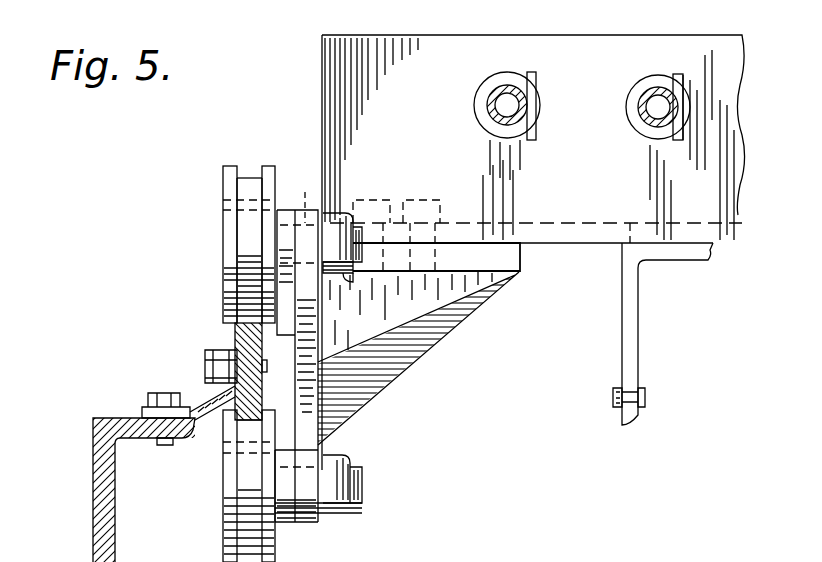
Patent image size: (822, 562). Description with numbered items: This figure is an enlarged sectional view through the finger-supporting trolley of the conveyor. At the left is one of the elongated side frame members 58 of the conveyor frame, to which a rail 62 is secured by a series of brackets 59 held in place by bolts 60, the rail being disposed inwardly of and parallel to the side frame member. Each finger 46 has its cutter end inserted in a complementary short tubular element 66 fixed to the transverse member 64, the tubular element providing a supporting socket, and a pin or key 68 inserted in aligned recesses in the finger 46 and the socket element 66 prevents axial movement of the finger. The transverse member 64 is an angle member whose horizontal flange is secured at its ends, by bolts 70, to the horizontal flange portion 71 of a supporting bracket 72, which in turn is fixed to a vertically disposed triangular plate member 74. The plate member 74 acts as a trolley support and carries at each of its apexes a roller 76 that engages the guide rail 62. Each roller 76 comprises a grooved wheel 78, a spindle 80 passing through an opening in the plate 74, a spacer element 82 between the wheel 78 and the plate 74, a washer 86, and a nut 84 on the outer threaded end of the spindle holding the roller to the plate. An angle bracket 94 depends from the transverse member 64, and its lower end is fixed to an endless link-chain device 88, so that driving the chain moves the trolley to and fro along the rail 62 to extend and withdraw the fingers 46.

The finger 46 is at (489, 127).
The side frame member 58 is at (93, 520).
The bracket 59 is at (207, 422).
The bolt 60 is at (205, 372).
The rail 62 is at (266, 338).
The transverse member 64 is at (428, 36).
The tubular element 66 is at (478, 88).
The pin or key 68 is at (538, 80).
The bolt 70 is at (373, 198).
The horizontal flange portion 71 is at (522, 262).
The supporting bracket 72 is at (434, 354).
The triangular plate member 74 is at (320, 329).
The roller 76 is at (217, 192).
The grooved wheel 78 is at (250, 177).
The spindle 80 is at (311, 195).
The spacer element 82 is at (280, 208).
The nut 84 is at (348, 279).
The washer 86 is at (330, 289).
The endless link-chain device 88 is at (647, 405).
The angle bracket 94 is at (640, 359).